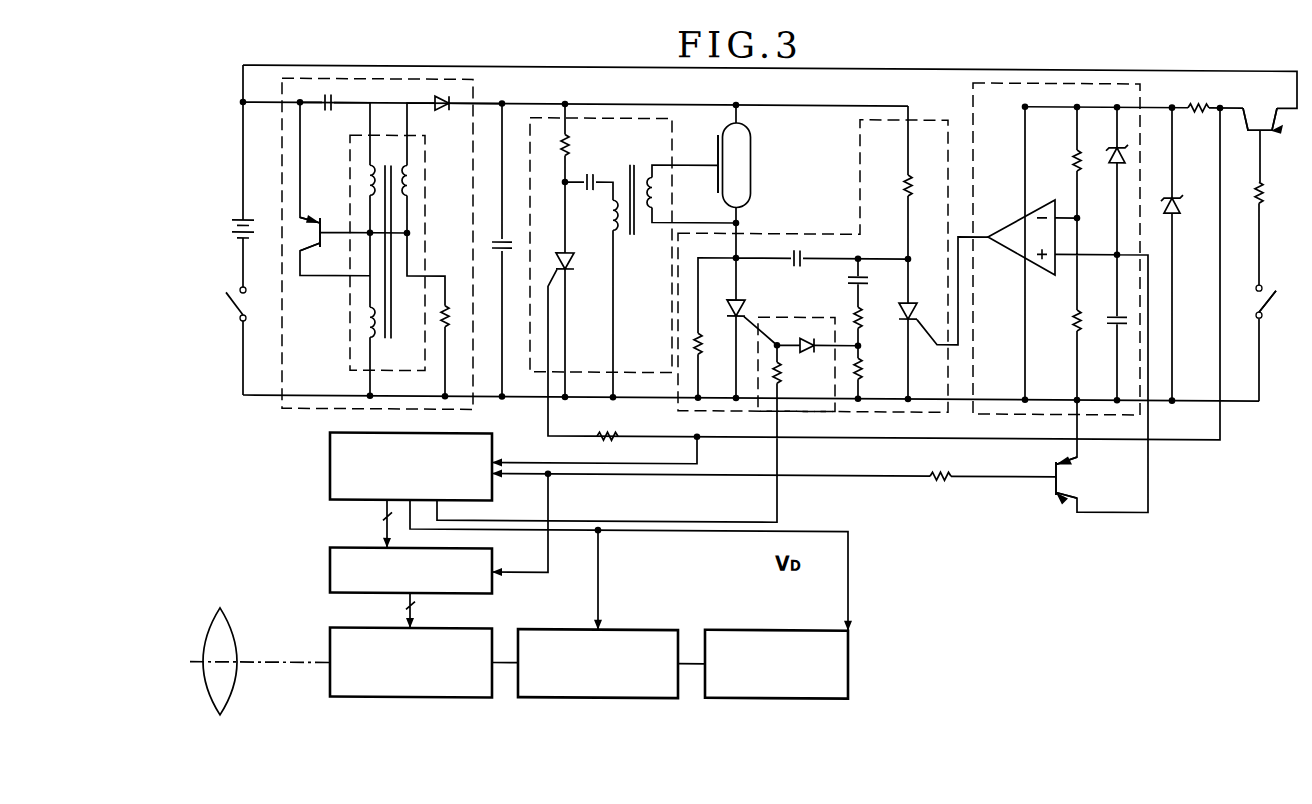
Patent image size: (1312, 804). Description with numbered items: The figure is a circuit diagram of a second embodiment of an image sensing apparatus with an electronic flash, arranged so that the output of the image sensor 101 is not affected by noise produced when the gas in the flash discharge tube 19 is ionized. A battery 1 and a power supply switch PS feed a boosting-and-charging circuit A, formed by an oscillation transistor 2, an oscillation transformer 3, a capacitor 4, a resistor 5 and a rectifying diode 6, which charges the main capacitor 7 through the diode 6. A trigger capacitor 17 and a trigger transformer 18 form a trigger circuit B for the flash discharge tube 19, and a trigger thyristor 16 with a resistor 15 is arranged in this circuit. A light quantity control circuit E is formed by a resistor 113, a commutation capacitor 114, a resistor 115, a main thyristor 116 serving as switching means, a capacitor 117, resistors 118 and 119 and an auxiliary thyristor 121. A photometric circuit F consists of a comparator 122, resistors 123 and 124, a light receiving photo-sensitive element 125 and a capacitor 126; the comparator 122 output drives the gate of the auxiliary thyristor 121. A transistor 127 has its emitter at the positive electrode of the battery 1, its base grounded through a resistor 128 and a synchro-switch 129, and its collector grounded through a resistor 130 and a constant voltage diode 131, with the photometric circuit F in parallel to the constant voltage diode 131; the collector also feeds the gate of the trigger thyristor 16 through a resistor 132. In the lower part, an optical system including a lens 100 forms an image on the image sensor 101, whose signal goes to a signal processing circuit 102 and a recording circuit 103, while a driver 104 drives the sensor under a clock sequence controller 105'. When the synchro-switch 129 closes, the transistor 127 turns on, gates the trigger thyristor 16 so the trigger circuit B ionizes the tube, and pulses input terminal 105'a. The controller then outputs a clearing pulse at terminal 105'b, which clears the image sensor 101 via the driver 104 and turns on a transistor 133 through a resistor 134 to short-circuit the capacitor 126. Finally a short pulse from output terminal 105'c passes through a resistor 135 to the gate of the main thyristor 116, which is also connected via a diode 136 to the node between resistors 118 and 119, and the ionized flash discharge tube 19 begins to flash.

The battery 1 is at (257, 225).
The power supply switch PS is at (246, 296).
The oscillation transistor 2 is at (312, 218).
The oscillation transformer 3 is at (394, 133).
The capacitor 4 is at (328, 118).
The resistor 5 is at (450, 310).
The rectifying diode 6 is at (440, 117).
The main capacitor 7 is at (508, 236).
The boosting-and-charging circuit A is at (473, 78).
The trigger circuit B is at (672, 118).
The light quantity control circuit E is at (860, 146).
The photometric circuit F is at (972, 102).
The resistor 15 is at (572, 144).
The trigger thyristor 16 is at (554, 246).
The trigger capacitor 17 is at (590, 196).
The trigger transformer 18 is at (637, 164).
The flash discharge tube 19 is at (753, 148).
The resistor 113 is at (905, 178).
The commutation capacitor 114 is at (793, 262).
The resistor 115 is at (704, 348).
The main thyristor 116 is at (729, 300).
The capacitor 117 is at (872, 274).
The resistor 118 is at (850, 306).
The resistor 119 is at (867, 364).
The auxiliary thyristor 121 is at (921, 301).
The comparator 122 is at (1012, 220).
The resistor 123 is at (1069, 152).
The resistor 124 is at (1068, 324).
The light receiving photo-sensitive element 125 is at (1112, 165).
The capacitor 126 is at (1109, 310).
The transistor 127 is at (1258, 115).
The resistor 128 is at (1254, 184).
The synchro-switch 129 is at (1254, 292).
The resistor 130 is at (1199, 110).
The constant voltage diode 131 is at (1178, 216).
The resistor 132 is at (610, 433).
The transistor 133 is at (1064, 477).
The resistor 134 is at (942, 485).
The resistor 135 is at (781, 383).
The diode 136 is at (810, 351).
The lens 100 is at (232, 631).
The image sensor 101 is at (473, 627).
The signal processing circuit 102 is at (646, 626).
The recording circuit 103 is at (817, 625).
The driver 104 is at (342, 544).
The clock sequence controller 105' is at (374, 466).
The input terminal 105'a is at (519, 449).
The terminal 105'b is at (520, 491).
The output terminal 105'c is at (575, 508).